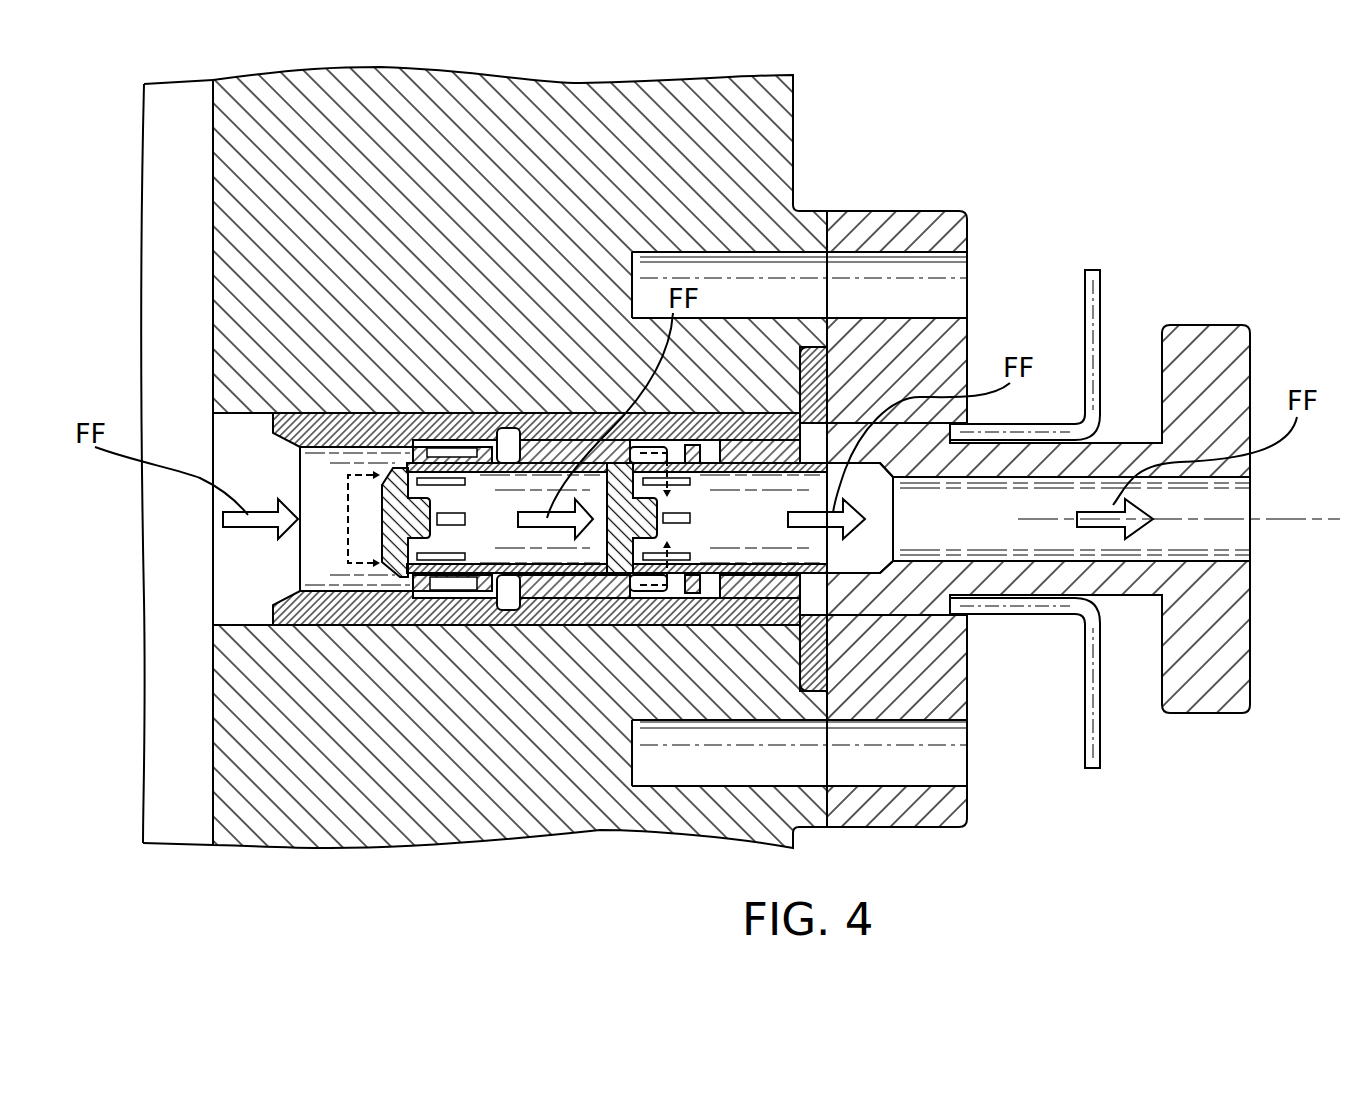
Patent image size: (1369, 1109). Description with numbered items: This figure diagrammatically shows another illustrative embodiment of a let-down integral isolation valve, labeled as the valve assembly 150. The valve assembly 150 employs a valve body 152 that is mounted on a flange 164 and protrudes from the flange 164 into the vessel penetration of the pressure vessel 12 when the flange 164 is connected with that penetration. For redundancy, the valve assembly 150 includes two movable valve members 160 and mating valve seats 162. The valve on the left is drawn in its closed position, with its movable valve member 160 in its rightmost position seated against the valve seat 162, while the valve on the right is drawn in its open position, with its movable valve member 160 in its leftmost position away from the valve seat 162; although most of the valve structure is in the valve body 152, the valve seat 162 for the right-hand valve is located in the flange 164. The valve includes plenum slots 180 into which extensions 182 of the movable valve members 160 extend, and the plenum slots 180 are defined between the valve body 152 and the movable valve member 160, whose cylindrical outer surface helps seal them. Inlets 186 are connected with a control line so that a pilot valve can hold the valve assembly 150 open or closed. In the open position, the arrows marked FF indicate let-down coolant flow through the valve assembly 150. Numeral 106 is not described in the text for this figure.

The pressure vessel 12 is at (412, 177).
The valve member 106 is at (393, 560).
The valve assembly 150 is at (633, 856).
The valve body 152 is at (333, 425).
The movable valve member 160 is at (752, 528).
The valve seat 162 is at (570, 578).
The flange 164 is at (1118, 575).
The plenum slot 180 is at (775, 455).
The extension 182 is at (734, 455).
The inlet 186 is at (1093, 287).